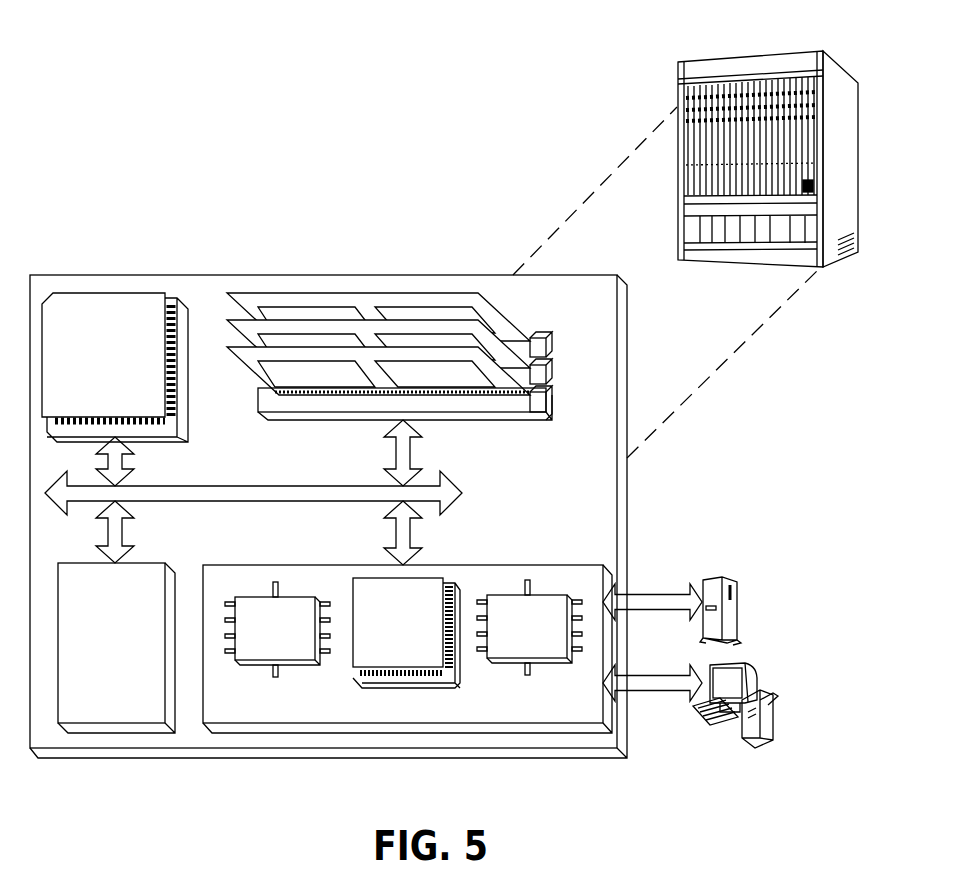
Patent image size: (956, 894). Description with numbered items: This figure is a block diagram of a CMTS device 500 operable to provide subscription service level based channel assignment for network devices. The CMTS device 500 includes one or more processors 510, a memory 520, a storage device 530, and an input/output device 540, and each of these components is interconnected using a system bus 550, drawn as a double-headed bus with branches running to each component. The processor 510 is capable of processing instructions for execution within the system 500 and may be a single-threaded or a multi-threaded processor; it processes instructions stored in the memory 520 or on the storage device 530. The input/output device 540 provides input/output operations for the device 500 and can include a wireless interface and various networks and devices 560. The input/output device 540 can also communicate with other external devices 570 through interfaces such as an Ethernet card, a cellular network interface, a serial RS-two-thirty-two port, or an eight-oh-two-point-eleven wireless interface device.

The CMTS device 500 is at (132, 108).
The one or more processors 510 is at (157, 410).
The memory 520 is at (527, 331).
The storage device 530 is at (147, 716).
The input/output device 540 is at (567, 564).
The system bus 550 is at (250, 501).
The various networks and devices 560 is at (750, 583).
The external devices 570 is at (698, 718).